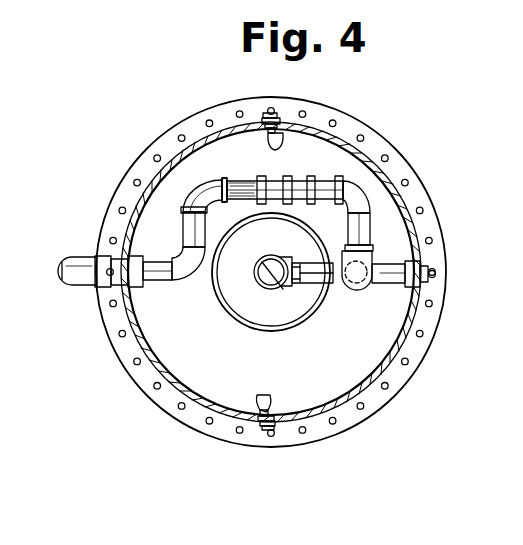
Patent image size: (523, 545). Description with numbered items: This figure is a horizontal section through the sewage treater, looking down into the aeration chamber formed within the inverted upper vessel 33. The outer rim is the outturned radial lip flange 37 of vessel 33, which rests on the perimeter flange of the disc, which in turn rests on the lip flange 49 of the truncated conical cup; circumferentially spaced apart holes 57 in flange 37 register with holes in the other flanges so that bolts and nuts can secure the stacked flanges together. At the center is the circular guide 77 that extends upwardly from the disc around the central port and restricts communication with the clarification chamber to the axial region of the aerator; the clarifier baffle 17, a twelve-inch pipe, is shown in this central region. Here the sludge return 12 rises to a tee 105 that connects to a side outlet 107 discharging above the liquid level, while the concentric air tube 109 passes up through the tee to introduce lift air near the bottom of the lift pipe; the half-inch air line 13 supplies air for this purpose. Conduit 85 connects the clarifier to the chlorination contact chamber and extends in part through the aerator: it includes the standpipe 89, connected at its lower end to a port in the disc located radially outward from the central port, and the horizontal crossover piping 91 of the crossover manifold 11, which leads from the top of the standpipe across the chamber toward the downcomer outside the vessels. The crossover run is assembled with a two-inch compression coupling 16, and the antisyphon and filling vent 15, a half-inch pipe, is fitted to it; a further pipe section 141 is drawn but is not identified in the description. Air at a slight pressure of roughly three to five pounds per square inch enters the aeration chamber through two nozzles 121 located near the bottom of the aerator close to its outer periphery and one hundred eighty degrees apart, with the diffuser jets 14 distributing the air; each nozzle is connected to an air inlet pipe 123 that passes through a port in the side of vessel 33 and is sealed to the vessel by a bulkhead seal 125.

The crossover manifold 11 is at (79, 256).
The sludge return 12 is at (288, 260).
The air line 13 is at (282, 287).
The diffuser jet 14 is at (284, 132).
The antisyphon and filling vent 15 is at (243, 188).
The compression coupling 16 is at (278, 180).
The clarifier baffle 17 is at (250, 331).
The vessel 33 is at (416, 320).
The flange 37 is at (420, 350).
The flange 49 is at (373, 352).
The holes 57 is at (403, 181).
The circular guide 77 is at (224, 311).
The conduit 85 is at (79, 298).
The standpipe 89 is at (347, 288).
The crossover piping 91 is at (159, 281).
The tee 105 is at (264, 289).
The side outlet 107 is at (318, 285).
The tube 109 is at (265, 260).
The nozzles 121 is at (280, 142).
The air inlet pipes 123 is at (266, 126).
The bulkhead seals 125 is at (268, 118).
The pipe nipple 141 is at (242, 185).